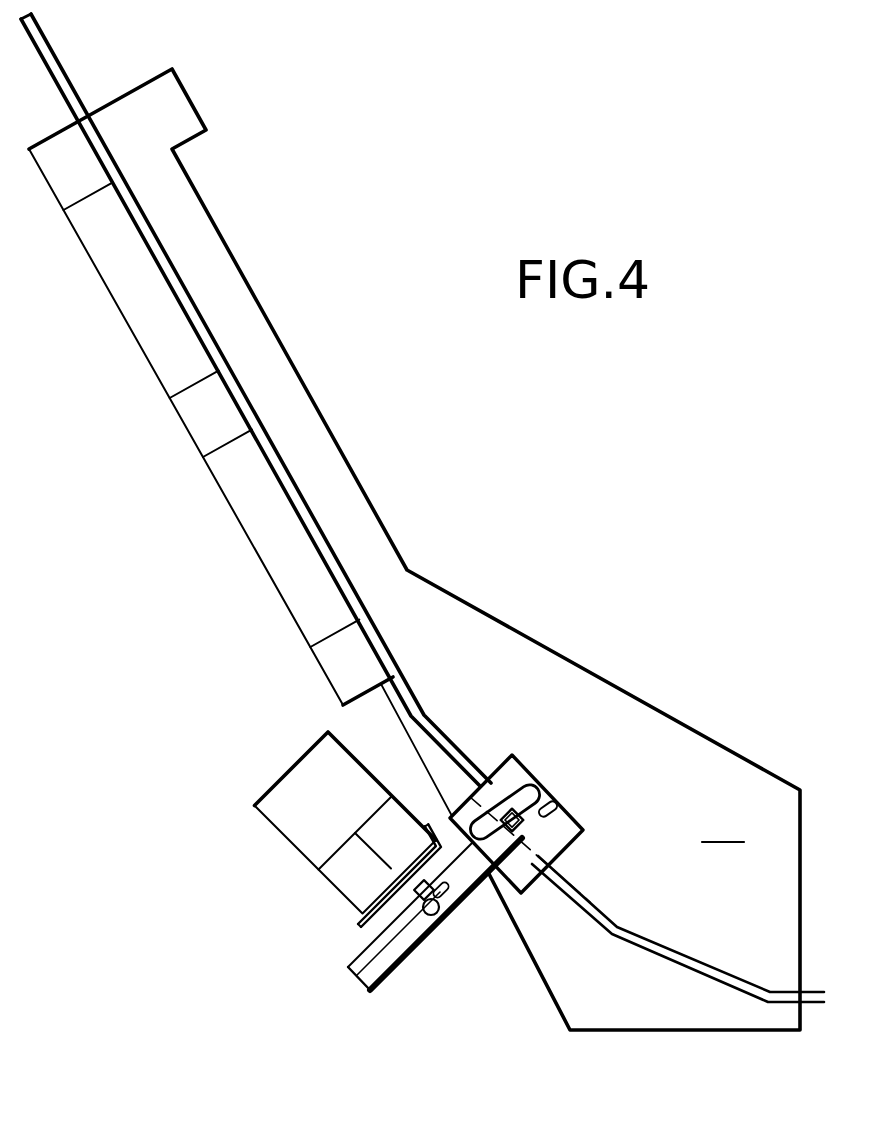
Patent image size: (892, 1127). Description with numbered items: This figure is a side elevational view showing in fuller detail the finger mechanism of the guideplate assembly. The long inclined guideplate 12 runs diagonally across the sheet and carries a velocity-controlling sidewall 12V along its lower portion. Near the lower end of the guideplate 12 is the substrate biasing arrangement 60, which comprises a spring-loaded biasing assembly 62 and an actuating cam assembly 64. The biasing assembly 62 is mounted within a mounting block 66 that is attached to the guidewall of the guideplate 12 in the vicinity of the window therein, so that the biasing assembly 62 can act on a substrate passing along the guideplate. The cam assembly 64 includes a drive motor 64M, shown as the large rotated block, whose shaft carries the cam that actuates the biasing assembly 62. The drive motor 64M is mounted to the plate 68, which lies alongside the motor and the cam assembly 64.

The guideplate 12 is at (270, 443).
The velocity-controlling sidewall 12V is at (678, 905).
The substrate biasing arrangement 60 is at (360, 729).
The spring-loaded biasing assembly 62 is at (470, 886).
The actuating cam assembly 64 is at (363, 937).
The drive motor 64M is at (297, 843).
The mounting block 66 is at (468, 813).
The plate 68 is at (361, 921).